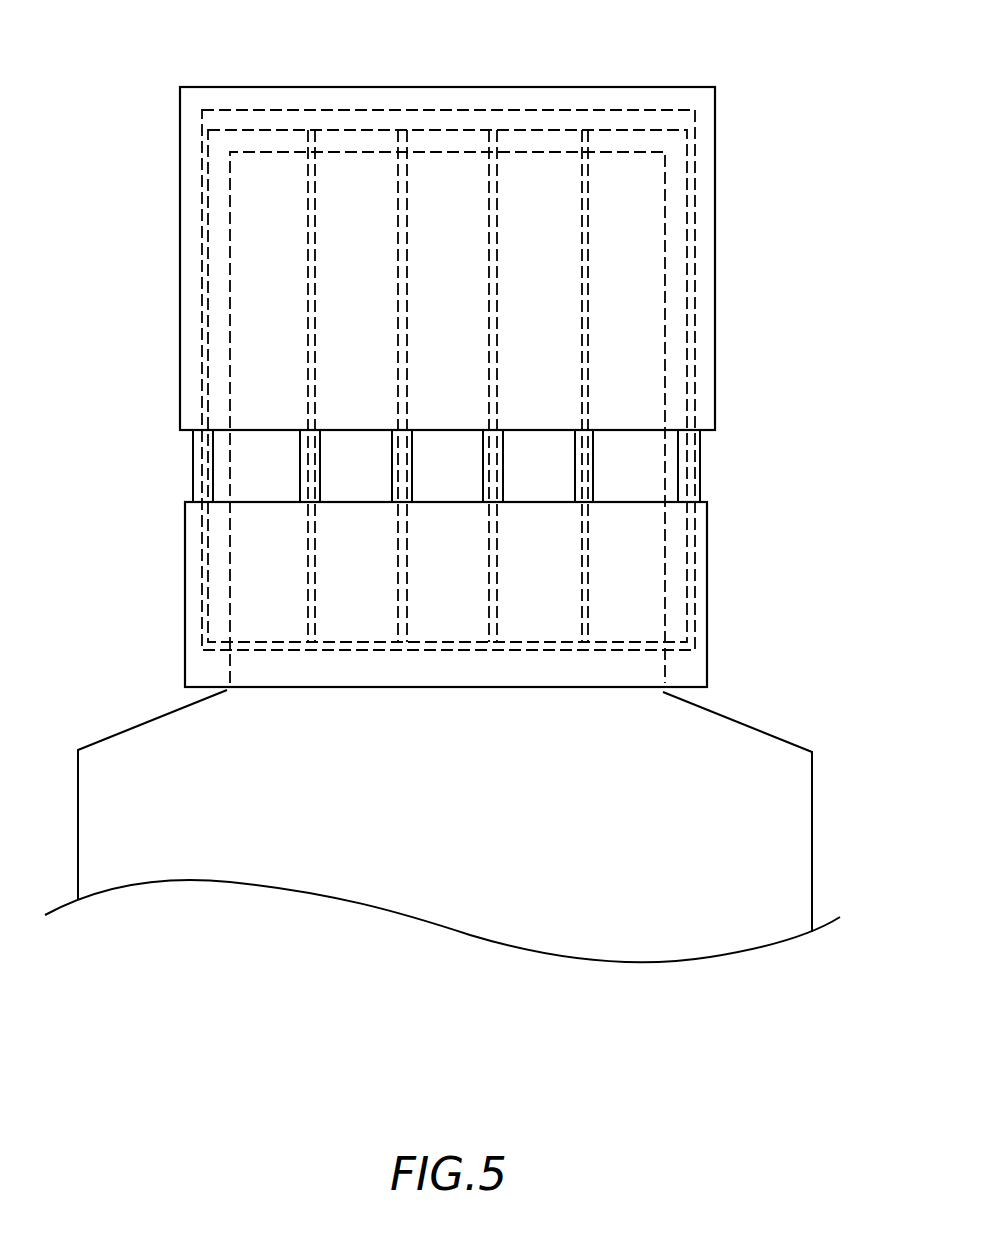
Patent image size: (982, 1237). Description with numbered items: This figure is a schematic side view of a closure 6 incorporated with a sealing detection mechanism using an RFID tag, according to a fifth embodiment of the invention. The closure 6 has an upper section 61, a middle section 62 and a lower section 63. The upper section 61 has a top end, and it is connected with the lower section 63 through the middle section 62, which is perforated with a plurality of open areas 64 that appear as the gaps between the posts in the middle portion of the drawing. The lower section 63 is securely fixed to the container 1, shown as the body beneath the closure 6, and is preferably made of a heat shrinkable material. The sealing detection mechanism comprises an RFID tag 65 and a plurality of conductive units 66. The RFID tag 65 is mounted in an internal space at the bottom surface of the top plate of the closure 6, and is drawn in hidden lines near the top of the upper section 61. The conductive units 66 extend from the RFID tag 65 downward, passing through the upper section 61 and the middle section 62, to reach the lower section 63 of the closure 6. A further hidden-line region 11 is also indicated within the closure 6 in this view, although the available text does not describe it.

The container 1 is at (803, 837).
The closure 6 is at (386, 86).
The receiving slot 11 is at (636, 150).
The upper section 61 is at (180, 262).
The middle section 62 is at (700, 478).
The lower section 63 is at (185, 575).
The open areas 64 is at (700, 440).
The RFID tag 65 is at (685, 118).
The conductive units 66 is at (585, 321).